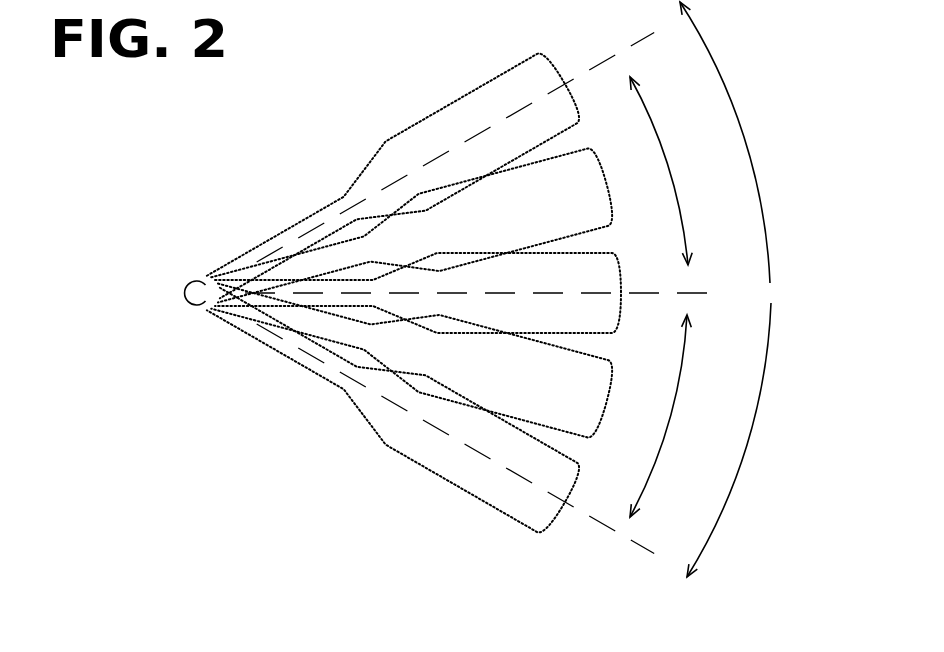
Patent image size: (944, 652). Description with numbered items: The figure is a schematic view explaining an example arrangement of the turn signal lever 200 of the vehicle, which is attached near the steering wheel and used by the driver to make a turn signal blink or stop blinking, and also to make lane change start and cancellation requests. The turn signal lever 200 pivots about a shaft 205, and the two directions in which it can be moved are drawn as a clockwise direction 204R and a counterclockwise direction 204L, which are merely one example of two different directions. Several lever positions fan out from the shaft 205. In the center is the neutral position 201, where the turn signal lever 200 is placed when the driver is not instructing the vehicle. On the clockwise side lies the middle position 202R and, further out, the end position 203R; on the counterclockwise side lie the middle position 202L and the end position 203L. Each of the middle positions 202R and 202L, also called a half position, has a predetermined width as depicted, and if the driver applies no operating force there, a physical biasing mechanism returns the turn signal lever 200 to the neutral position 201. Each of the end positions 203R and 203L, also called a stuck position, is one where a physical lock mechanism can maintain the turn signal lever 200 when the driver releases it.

The turn signal lever 200 is at (616, 263).
The neutral position 201 is at (700, 293).
The middle position 202L is at (678, 178).
The middle position 202R is at (668, 430).
The end position 203L is at (590, 72).
The end position 203R is at (637, 543).
The counterclockwise direction 204L is at (762, 190).
The clockwise direction 204R is at (807, 368).
The shaft 205 is at (193, 281).